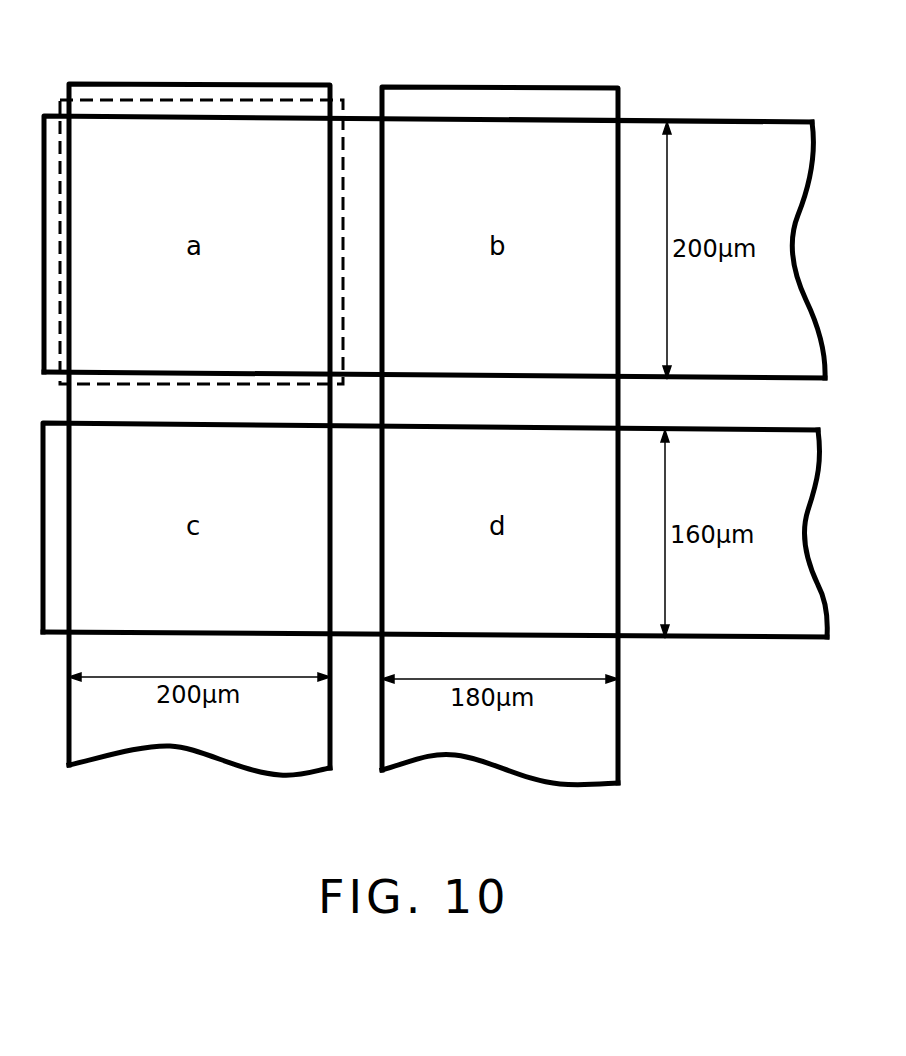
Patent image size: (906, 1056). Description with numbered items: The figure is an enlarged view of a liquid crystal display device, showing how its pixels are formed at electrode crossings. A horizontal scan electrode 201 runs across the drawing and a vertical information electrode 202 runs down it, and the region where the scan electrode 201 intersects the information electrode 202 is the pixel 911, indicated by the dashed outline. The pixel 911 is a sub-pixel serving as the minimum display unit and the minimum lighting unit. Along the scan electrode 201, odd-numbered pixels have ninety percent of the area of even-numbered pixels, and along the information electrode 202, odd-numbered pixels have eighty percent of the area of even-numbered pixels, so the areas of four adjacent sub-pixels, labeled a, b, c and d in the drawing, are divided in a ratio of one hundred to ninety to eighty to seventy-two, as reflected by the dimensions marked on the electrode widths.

The scan electrode 201 is at (52, 112).
The information electrode 202 is at (200, 84).
The pixel 911 is at (338, 102).